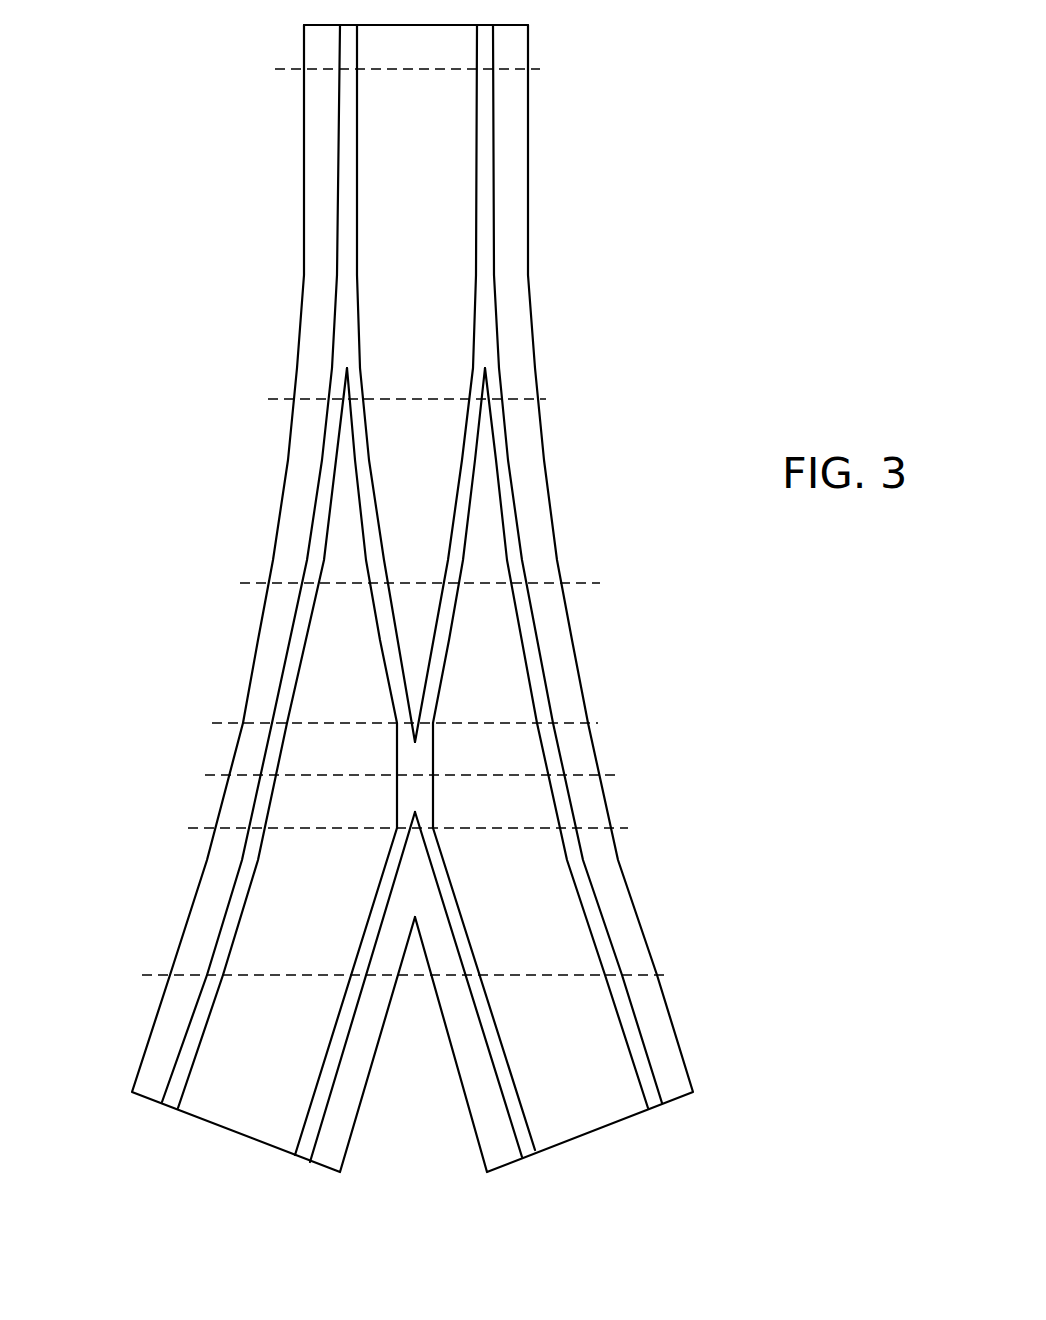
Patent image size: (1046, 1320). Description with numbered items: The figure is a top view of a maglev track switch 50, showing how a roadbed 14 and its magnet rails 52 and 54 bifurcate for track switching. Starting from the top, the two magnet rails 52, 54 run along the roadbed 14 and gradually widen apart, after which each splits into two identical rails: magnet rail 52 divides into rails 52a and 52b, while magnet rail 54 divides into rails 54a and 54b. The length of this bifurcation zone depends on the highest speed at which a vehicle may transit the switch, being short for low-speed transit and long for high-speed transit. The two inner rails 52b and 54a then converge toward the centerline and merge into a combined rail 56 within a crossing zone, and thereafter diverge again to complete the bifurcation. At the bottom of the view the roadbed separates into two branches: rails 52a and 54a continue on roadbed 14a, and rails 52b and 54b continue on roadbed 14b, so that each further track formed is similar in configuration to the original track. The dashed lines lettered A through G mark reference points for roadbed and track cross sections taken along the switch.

The roadbed 14 is at (517, 40).
The roadbed 14a is at (148, 1073).
The roadbed 14b is at (678, 1075).
The maglev track switch 50 is at (598, 242).
The magnet rail 52 is at (348, 130).
The rail 52a is at (330, 458).
The rail 52b is at (370, 523).
The magnet rail 54 is at (485, 130).
The rail 54a is at (462, 523).
The rail 54b is at (502, 458).
The combined rail 56 is at (415, 762).